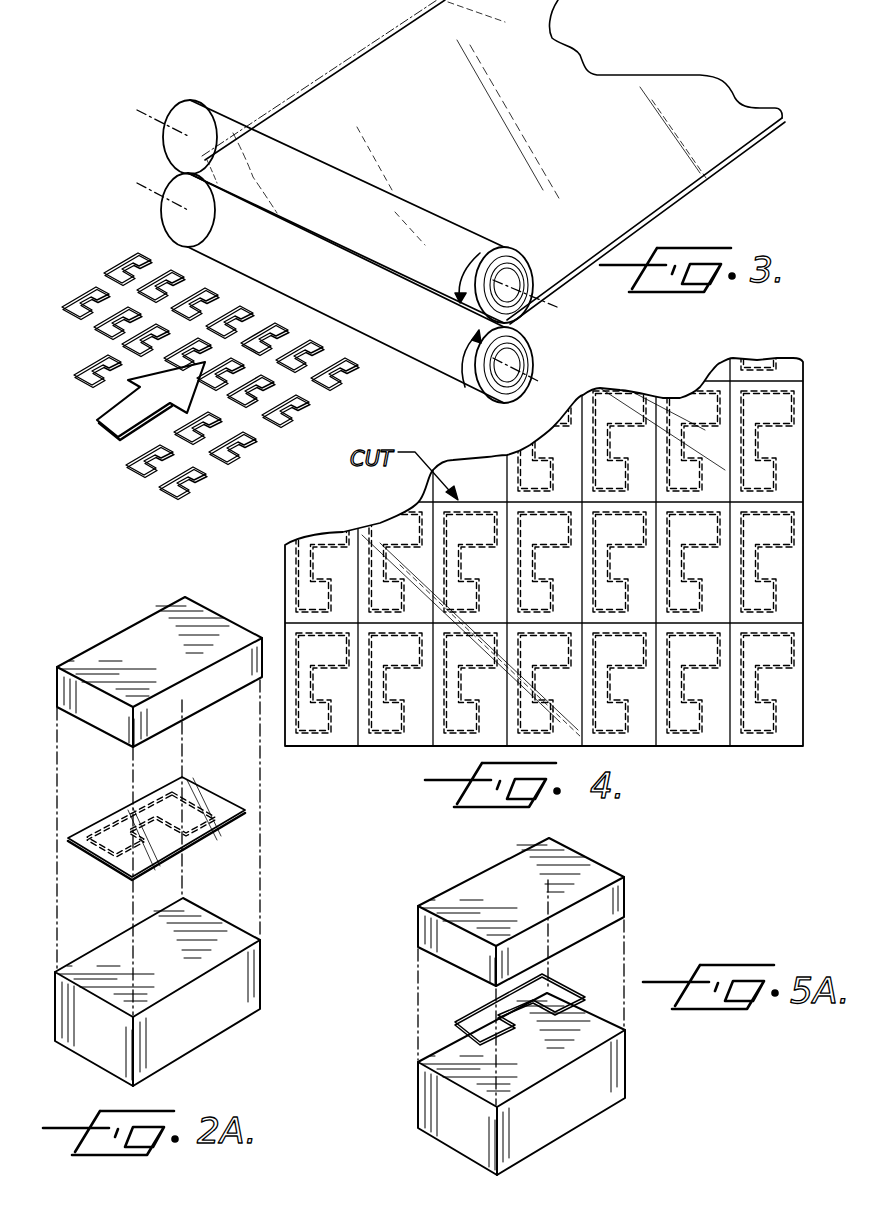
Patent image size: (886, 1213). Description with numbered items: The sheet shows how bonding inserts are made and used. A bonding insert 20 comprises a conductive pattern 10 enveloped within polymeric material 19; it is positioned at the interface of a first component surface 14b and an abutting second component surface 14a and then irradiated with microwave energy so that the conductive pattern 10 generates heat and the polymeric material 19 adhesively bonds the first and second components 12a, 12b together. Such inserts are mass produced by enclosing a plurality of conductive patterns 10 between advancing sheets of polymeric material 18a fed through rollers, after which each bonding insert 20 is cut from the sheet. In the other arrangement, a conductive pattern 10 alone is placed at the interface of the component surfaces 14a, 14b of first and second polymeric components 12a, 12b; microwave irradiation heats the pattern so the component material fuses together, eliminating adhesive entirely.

In FIG. 3, the conductive pattern 10 is at (343, 373).
In FIG. 4, the conductive pattern 10 is at (800, 407).
In FIG. 2A, the conductive pattern 10 is at (206, 803).
In FIG. 5A, the conductive pattern 10 is at (568, 988).
In FIG. 2A, the first component 12a is at (197, 620).
In FIG. 5A, the first component 12a is at (605, 866).
In FIG. 2A, the second component 12b is at (258, 971).
In FIG. 5A, the second component 12b is at (618, 1078).
In FIG. 2A, the component surface 14a is at (107, 733).
In FIG. 5A, the component surface 14a is at (457, 963).
In FIG. 2A, the component surface 14b is at (117, 997).
In FIG. 5A, the component surface 14b is at (467, 1072).
In FIG. 3, the sheet of polymeric material 18a is at (462, 237).
In FIG. 4, the polymeric material 19 is at (790, 446).
In FIG. 2A, the polymeric material 19 is at (93, 852).
In FIG. 4, the bonding insert 20 is at (805, 473).
In FIG. 2A, the bonding insert 20 is at (237, 807).